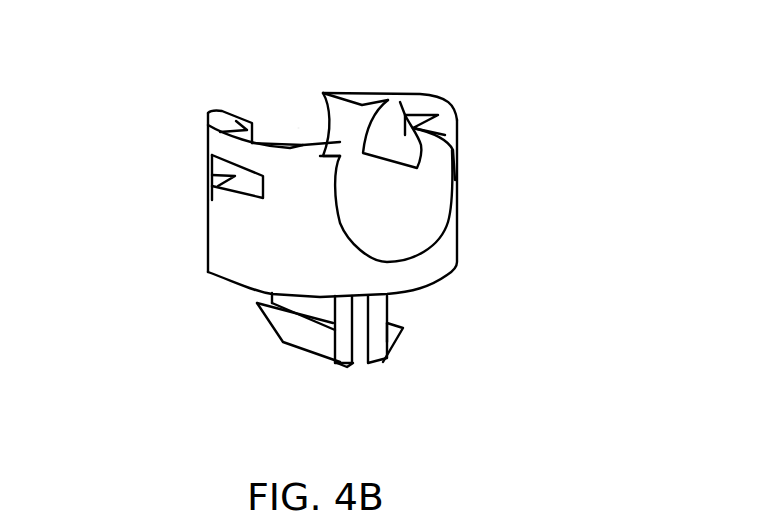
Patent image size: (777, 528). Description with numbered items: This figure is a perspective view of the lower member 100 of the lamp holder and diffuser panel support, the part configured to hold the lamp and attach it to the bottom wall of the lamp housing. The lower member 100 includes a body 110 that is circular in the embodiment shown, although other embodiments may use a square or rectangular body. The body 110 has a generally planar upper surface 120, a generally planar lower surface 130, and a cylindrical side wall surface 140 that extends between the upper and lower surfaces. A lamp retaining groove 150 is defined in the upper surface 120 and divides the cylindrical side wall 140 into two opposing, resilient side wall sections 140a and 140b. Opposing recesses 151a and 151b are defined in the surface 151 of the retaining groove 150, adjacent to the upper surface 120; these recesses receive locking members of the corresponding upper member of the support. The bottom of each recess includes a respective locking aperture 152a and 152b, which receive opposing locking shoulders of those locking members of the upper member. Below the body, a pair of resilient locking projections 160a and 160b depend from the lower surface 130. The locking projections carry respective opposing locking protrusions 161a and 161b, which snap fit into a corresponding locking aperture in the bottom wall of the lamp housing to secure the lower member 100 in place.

The lower member 100 is at (196, 119).
The body 110 is at (205, 252).
The upper surface 120 is at (213, 110).
The lower surface 130 is at (230, 284).
The cylindrical side wall surface 140 is at (207, 220).
The resilient side wall section 140a is at (207, 142).
The resilient side wall section 140b is at (447, 177).
The lamp retaining groove 150 is at (298, 125).
The surface of the retaining groove 151 is at (460, 218).
The recess 151a is at (232, 110).
The recess 151b is at (378, 113).
The locking aperture 152a is at (207, 168).
The locking aperture 152b is at (412, 125).
The resilient locking projection 160a is at (342, 365).
The resilient locking projection 160b is at (380, 350).
The locking protrusion 161a is at (303, 353).
The locking protrusion 161b is at (393, 340).